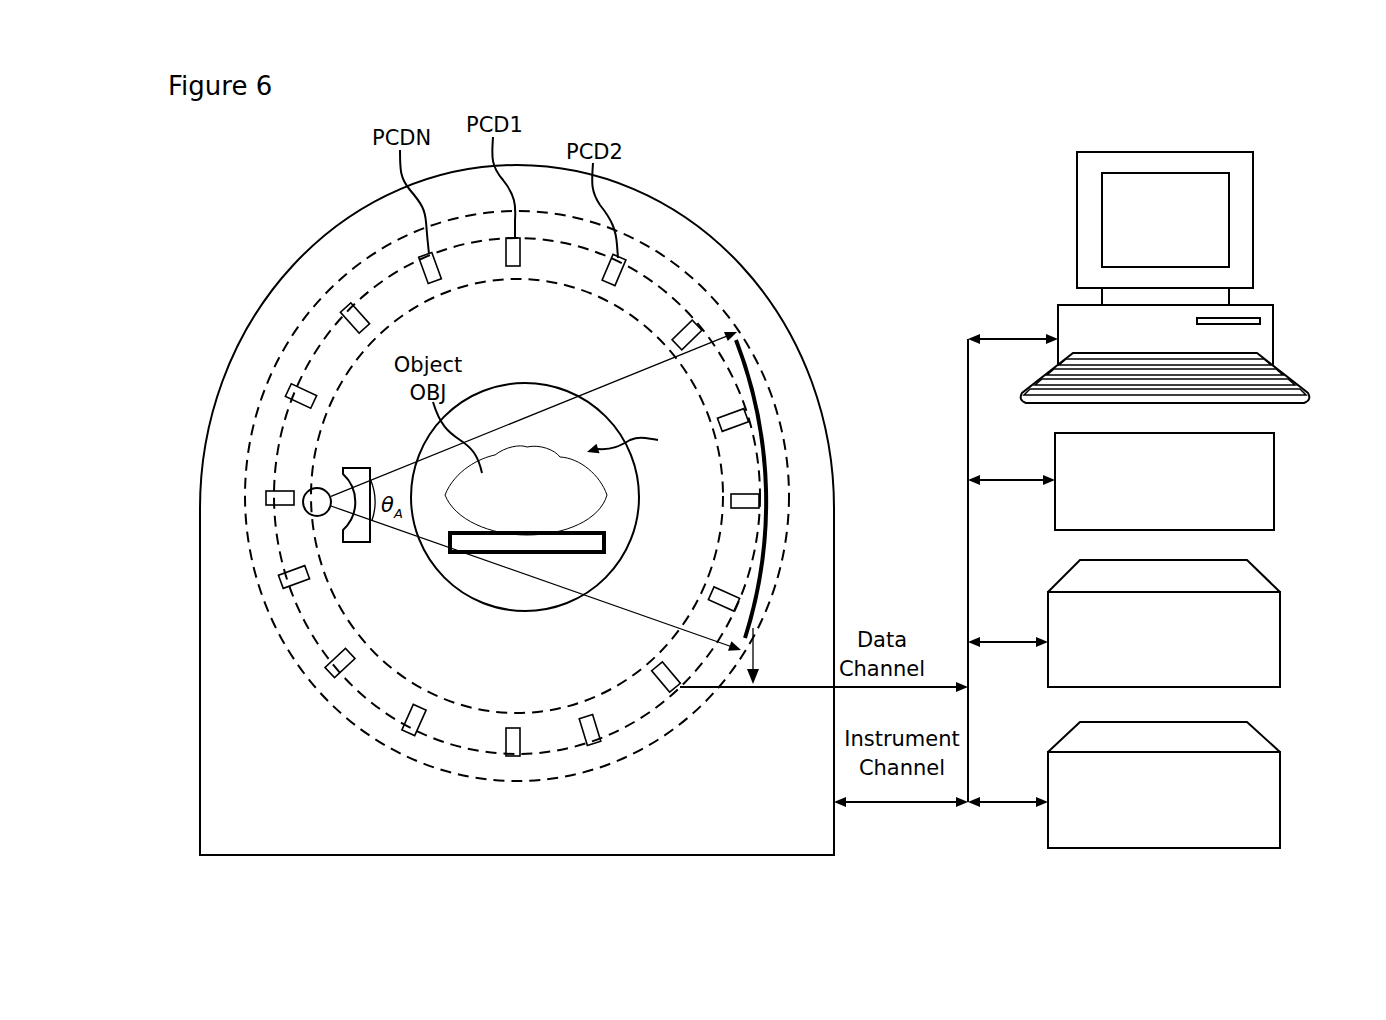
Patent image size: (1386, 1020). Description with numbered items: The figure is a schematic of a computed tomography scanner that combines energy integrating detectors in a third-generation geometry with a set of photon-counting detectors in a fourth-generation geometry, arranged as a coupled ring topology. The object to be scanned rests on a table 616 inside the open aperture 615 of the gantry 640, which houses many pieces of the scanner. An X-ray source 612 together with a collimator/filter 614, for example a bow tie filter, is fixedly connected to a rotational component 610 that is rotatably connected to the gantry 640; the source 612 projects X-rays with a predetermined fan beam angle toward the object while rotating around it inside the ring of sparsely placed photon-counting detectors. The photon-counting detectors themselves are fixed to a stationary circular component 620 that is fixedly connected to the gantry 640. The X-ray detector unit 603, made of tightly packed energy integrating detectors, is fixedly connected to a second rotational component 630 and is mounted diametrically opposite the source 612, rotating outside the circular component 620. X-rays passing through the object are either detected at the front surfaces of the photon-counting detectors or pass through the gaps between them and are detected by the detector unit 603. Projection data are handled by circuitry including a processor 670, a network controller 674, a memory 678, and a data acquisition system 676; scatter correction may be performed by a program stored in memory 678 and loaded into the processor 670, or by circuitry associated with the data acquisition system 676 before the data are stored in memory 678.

The X-ray detector unit 603 is at (755, 378).
The rotational component 610 is at (388, 670).
The X-ray source 612 is at (305, 518).
The collimator/filter 614 is at (343, 472).
The open aperture 615 is at (645, 442).
The table 616 is at (522, 552).
The circular component 620 is at (443, 745).
The rotational component 630 is at (568, 768).
The gantry 640 is at (732, 255).
The processor 670 is at (1165, 277).
The network controller 674 is at (1164, 481).
The data acquisition system 676 is at (1164, 785).
The memory 678 is at (1164, 623).